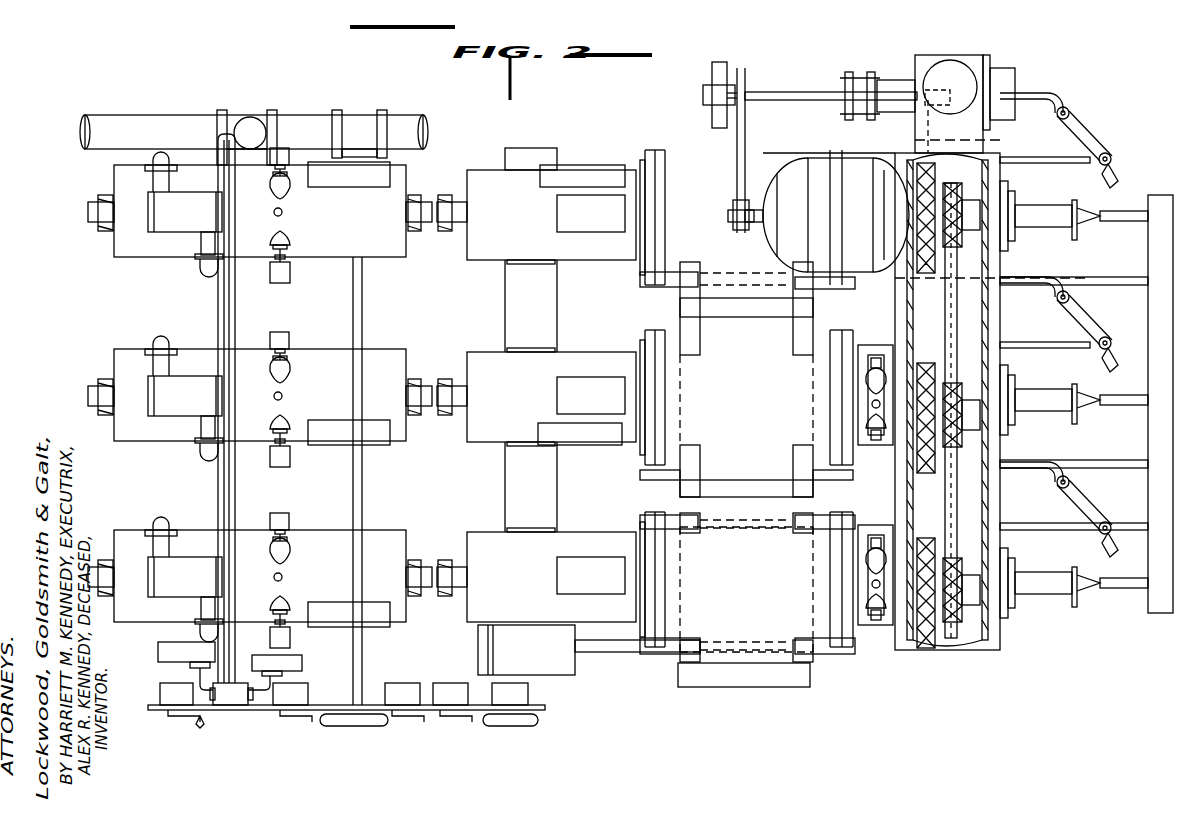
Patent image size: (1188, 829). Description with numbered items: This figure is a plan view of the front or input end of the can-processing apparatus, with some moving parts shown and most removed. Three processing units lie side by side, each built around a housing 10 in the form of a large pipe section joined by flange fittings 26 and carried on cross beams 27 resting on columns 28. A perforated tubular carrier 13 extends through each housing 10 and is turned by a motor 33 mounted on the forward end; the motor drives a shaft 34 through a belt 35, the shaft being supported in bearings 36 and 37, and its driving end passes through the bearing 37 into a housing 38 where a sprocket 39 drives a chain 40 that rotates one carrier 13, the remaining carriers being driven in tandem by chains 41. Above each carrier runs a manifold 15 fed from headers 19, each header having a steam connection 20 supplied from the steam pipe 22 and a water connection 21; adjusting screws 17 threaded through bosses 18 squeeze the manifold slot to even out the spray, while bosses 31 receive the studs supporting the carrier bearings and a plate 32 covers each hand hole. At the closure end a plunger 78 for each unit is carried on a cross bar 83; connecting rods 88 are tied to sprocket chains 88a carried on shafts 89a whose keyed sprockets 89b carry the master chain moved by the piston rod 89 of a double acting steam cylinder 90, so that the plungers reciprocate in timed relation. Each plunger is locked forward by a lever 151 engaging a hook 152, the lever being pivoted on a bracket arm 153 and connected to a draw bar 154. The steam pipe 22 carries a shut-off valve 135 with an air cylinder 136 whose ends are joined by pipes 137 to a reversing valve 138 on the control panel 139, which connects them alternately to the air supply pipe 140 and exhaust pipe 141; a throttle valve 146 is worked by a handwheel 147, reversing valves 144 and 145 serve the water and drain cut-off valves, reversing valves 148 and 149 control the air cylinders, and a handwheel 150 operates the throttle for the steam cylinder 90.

The housing 10 is at (140, 262).
The tubular carrier 13 is at (100, 196).
The manifold 15 is at (90, 226).
The adjusting screws 17 is at (288, 254).
The bosses 18 is at (270, 238).
The headers 19 is at (185, 394).
The steam connection 20 is at (156, 184).
The water connection 21 is at (201, 244).
The steam pipe 22 is at (122, 120).
The flange fittings 26 is at (745, 472).
The cross beams 27 is at (556, 314).
The columns 28 is at (746, 398).
The bosses 31 is at (291, 278).
The plate 32 is at (360, 187).
The motor 33 is at (827, 215).
The shaft 34 is at (790, 90).
The belt 35 is at (748, 150).
The bearing 36 is at (712, 80).
The bearing 37 is at (893, 80).
The housing 38 is at (971, 139).
The sprocket 39 is at (948, 62).
The chain 40 is at (915, 140).
The chains 41 is at (988, 300).
The plunger 78 is at (1095, 222).
The cross bar 83 is at (1148, 300).
The connecting rods 88 is at (1105, 277).
The sprocket chain 88a is at (825, 286).
The piston rod 89 is at (598, 654).
The shafts 89a is at (670, 478).
The sprockets 89b is at (648, 656).
The double acting steam cylinder 90 is at (526, 650).
The shut-off valve 135 is at (230, 110).
The air cylinder 136 is at (252, 120).
The pipes 137 is at (236, 314).
The reversing valve 138 is at (222, 708).
The control panel 139 is at (266, 712).
The air supply pipe 140 is at (298, 660).
The exhaust pipe 141 is at (165, 655).
The reversing valve 144 is at (292, 708).
The reversing valve 145 is at (168, 708).
The throttle valve 146 is at (365, 125).
The handwheel 147 is at (354, 726).
The reversing valve 148 is at (402, 708).
The reversing valve 149 is at (450, 708).
The handwheel 150 is at (508, 726).
The lever 151 is at (1112, 160).
The hook 152 is at (1108, 196).
The bracket arm 153 is at (1036, 92).
The draw bar 154 is at (1032, 165).